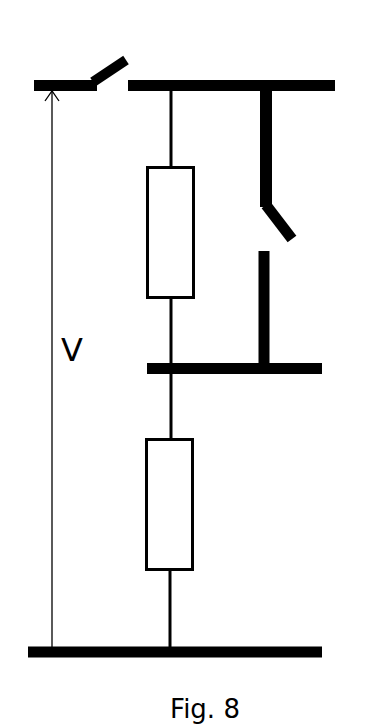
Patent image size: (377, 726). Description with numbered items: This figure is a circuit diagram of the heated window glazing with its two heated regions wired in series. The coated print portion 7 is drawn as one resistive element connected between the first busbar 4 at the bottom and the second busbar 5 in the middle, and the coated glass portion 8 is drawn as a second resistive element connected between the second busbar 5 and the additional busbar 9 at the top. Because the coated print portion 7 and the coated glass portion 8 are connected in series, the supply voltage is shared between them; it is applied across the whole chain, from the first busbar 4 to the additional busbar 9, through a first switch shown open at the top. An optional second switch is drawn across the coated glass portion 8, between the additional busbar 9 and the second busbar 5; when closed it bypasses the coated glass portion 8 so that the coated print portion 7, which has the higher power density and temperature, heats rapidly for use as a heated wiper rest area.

The additional busbar 9 is at (285, 81).
The coated glass portion 8 is at (171, 233).
The second busbar 5 is at (287, 371).
The coated print portion 7 is at (170, 505).
The first busbar 4 is at (286, 647).